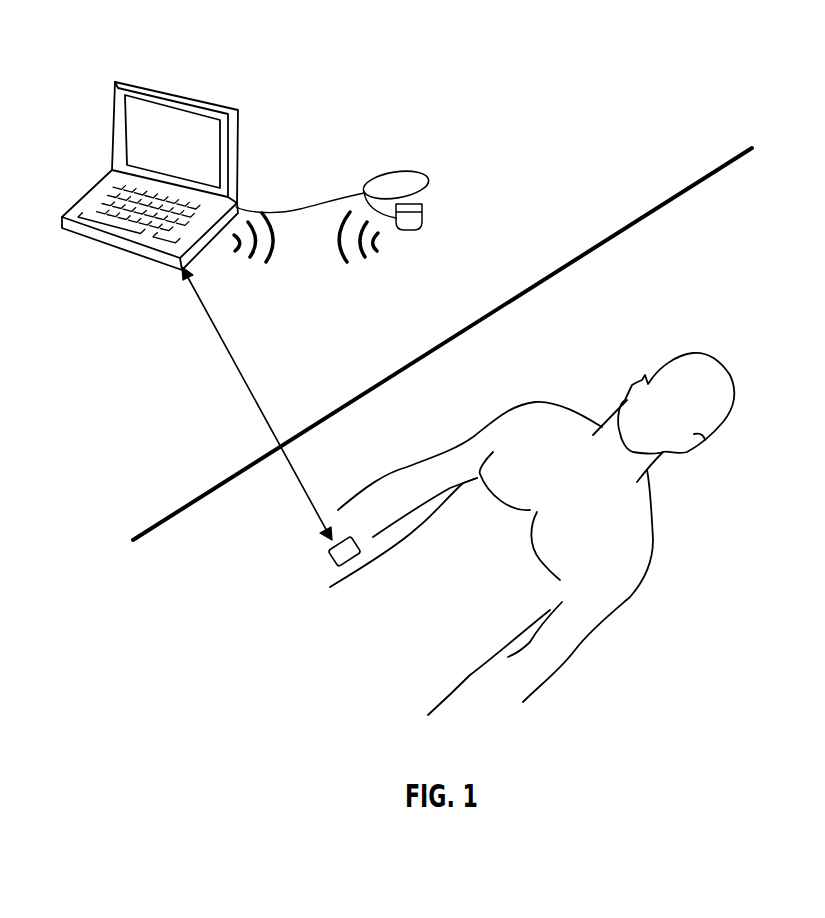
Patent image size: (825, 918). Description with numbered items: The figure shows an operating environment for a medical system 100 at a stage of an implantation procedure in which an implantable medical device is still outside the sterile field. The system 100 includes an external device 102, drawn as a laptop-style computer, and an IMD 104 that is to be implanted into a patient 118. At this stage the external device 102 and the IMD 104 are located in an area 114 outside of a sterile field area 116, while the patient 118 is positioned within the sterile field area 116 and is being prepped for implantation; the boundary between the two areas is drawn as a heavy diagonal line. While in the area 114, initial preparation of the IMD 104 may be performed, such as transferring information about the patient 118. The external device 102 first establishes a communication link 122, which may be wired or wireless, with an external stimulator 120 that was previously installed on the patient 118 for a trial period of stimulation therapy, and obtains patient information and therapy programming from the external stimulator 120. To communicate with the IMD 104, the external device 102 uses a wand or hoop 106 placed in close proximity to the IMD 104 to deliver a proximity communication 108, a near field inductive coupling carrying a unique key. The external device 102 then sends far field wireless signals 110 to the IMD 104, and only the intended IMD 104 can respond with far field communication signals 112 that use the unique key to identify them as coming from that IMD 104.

The system 100 is at (387, 92).
The external device 102 is at (238, 152).
The IMD 104 is at (423, 223).
The wand or hoop 106 is at (430, 173).
The proximity communication 108 is at (380, 209).
The far field wireless signals 110 is at (253, 258).
The far field communication signals 112 is at (334, 267).
The area outside of the sterile field 114 is at (620, 207).
The sterile field area 116 is at (657, 281).
The patient 118 is at (480, 665).
The external stimulator 120 is at (328, 552).
The communication link 122 is at (302, 494).